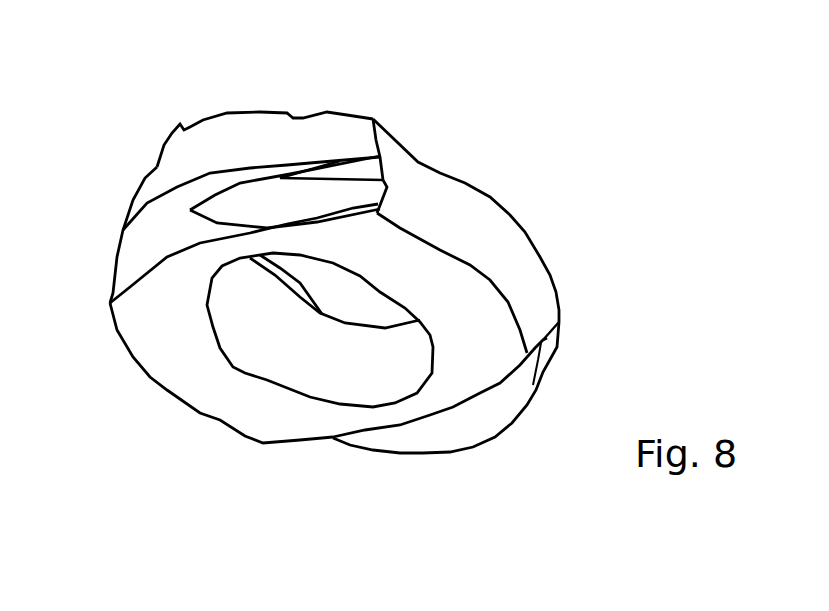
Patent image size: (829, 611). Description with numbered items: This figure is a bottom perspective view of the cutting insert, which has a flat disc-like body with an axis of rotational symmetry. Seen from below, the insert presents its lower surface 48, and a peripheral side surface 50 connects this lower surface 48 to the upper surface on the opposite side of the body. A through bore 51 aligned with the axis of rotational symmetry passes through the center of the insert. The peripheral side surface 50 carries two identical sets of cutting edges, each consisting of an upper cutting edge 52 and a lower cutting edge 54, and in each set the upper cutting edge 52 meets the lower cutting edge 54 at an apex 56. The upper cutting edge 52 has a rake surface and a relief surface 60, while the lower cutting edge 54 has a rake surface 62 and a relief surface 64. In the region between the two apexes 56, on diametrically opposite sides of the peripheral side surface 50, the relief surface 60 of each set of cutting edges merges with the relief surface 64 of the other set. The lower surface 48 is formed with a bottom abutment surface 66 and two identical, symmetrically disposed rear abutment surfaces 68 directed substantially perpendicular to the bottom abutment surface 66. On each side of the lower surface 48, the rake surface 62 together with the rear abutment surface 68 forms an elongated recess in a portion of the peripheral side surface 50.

The lower surface 48 is at (152, 325).
The peripheral side surface 50 is at (103, 152).
The through bore 51 is at (330, 362).
The upper cutting edge 52 is at (490, 197).
The lower cutting edge 54 is at (230, 170).
The apex 56 is at (380, 154).
The relief surface 60 is at (540, 288).
The rake surface 62 is at (140, 255).
The relief surface 64 is at (157, 170).
The bottom abutment surface 66 is at (215, 393).
The rear abutment surface 68 is at (263, 215).